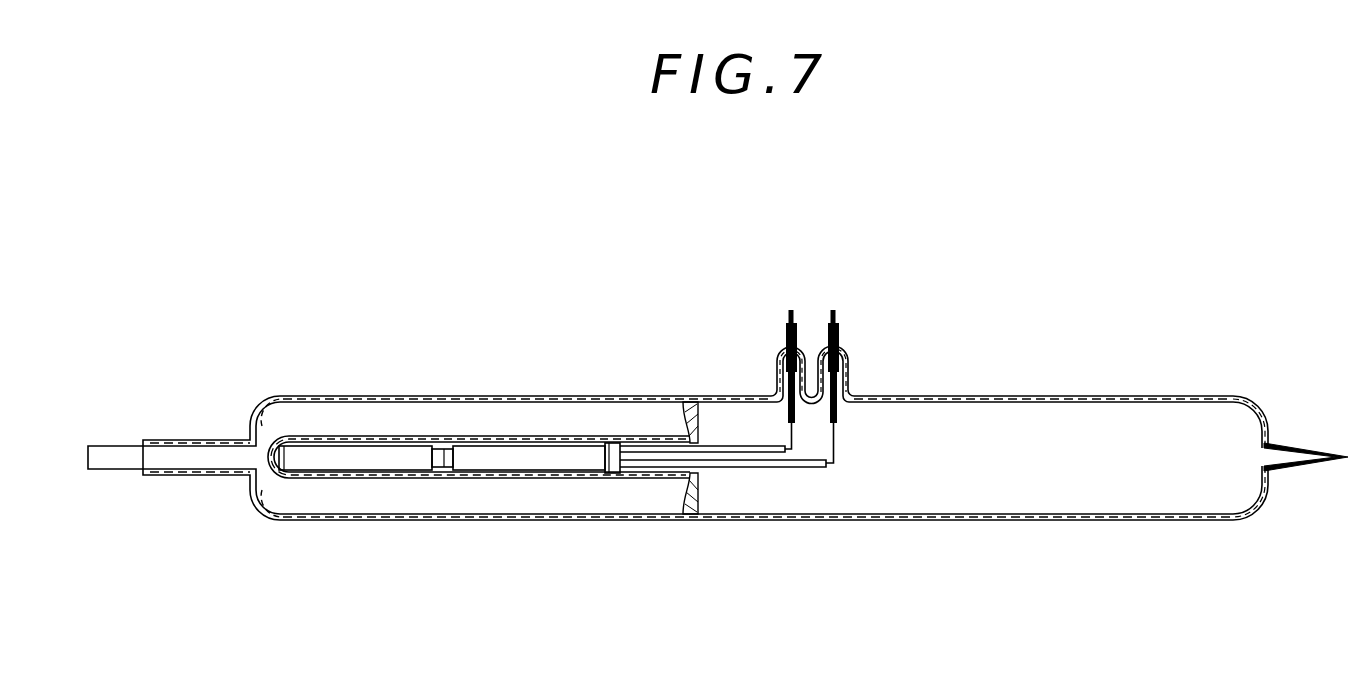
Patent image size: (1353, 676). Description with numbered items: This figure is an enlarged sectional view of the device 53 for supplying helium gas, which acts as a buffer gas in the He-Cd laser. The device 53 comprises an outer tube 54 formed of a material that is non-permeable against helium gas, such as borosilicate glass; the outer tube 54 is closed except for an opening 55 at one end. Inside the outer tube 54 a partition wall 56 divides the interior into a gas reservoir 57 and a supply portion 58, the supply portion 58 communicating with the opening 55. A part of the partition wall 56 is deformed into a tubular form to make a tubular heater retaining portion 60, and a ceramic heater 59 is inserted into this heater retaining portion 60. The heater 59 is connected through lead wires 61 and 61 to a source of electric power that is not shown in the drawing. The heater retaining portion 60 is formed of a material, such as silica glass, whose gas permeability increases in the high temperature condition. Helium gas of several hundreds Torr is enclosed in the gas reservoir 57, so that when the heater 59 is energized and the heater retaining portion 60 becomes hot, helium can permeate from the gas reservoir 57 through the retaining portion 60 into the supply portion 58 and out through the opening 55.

The device for supplying helium gas 53 is at (930, 397).
The outer tube 54 is at (1047, 397).
The opening 55 is at (174, 452).
The partition wall 56 is at (700, 422).
The gas reservoir 57 is at (927, 493).
The supply portion 58 is at (485, 500).
The ceramic heater 59 is at (507, 450).
The heater retaining portion 60 is at (433, 437).
The lead wires 61 is at (793, 308).